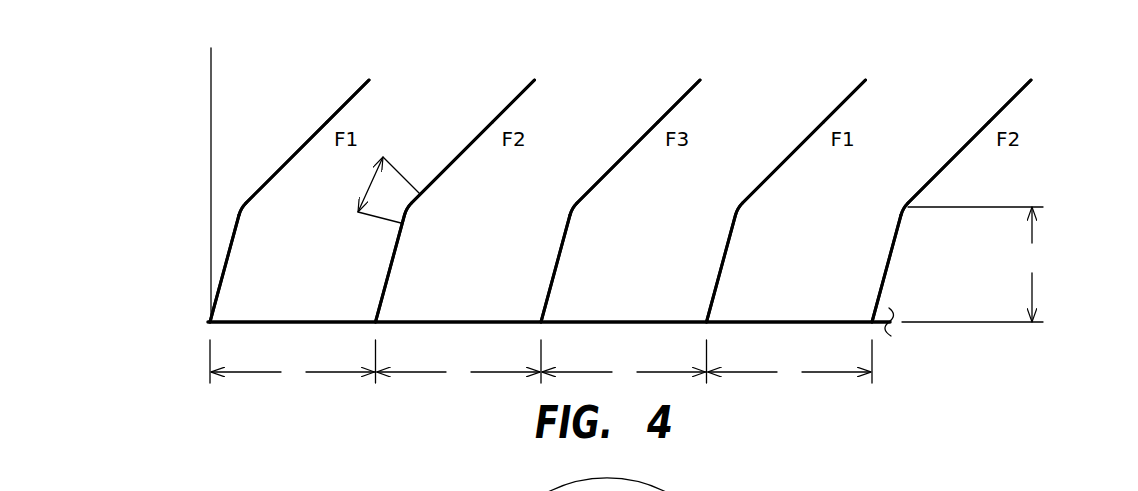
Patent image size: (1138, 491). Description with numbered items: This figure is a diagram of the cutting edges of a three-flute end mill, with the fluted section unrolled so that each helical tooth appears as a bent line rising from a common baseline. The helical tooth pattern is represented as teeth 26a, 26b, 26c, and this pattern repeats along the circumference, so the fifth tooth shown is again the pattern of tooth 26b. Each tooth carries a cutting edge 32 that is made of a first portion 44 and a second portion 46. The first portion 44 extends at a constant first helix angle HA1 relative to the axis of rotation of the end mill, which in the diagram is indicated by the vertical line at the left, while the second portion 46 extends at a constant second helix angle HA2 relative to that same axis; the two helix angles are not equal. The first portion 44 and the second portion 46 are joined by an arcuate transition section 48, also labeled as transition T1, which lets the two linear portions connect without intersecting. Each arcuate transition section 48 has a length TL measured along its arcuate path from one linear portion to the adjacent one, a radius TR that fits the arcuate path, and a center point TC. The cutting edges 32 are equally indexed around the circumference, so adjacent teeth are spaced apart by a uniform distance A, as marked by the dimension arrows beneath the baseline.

The helical tooth 26a is at (361, 93).
The helical tooth 26b is at (526, 93).
The helical tooth 26c is at (692, 93).
The cutting edge 32 is at (327, 122).
The first portion 44 is at (227, 262).
The second portion 46 is at (288, 163).
The arcuate transition section 48 is at (247, 209).
The first helix angle HA1 is at (288, 252).
The second helix angle HA2 is at (319, 128).
The arcuate transition section T1 is at (243, 207).
The length of arcuate transition section TL is at (368, 176).
The radius of arcuate transition section TR is at (412, 208).
The center point of arcuate transition section TC is at (976, 264).
The circumferential spacing distance A is at (541, 362).